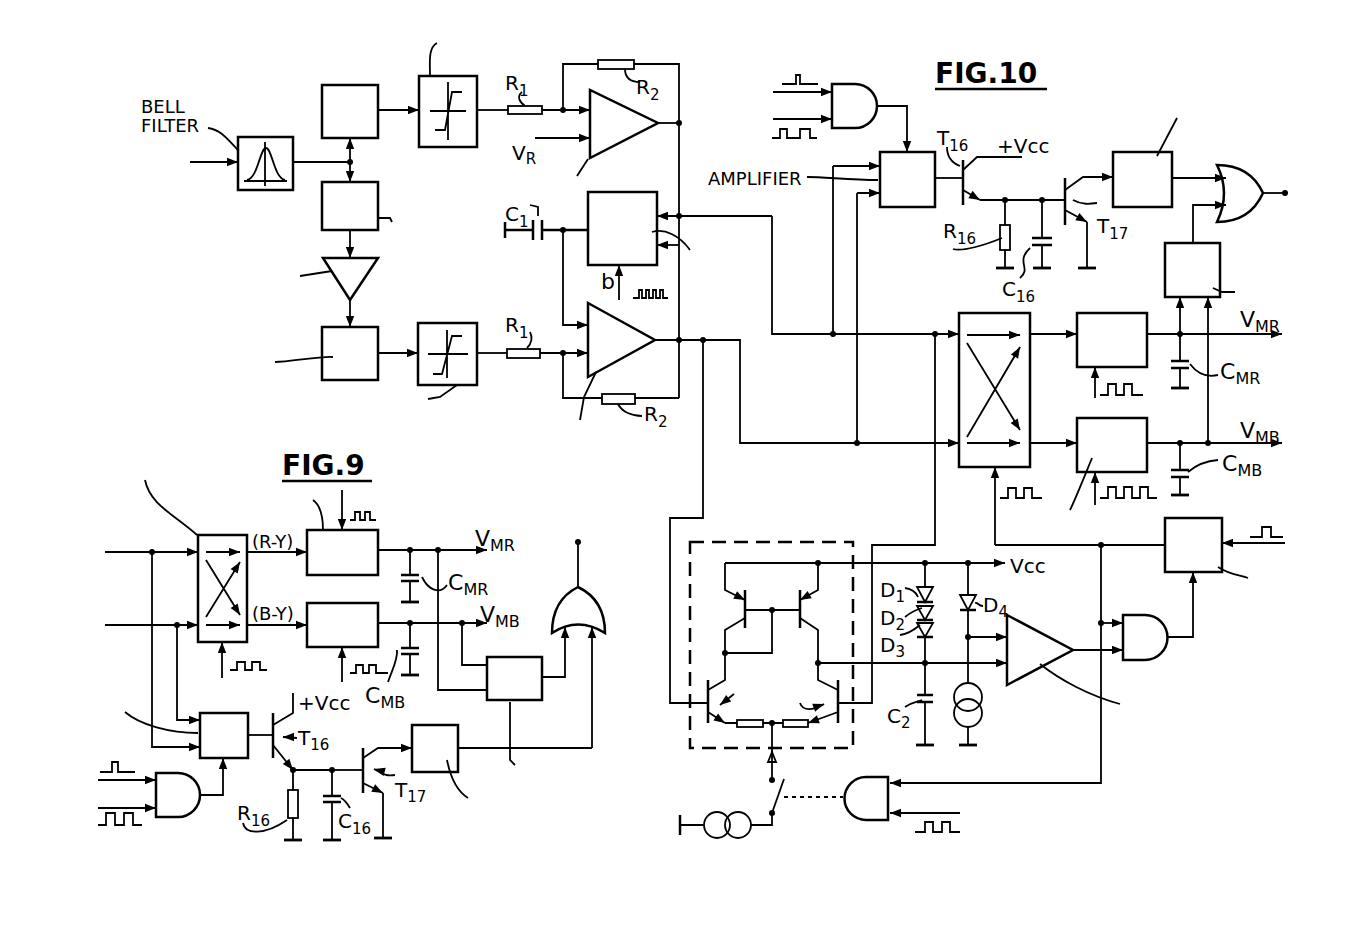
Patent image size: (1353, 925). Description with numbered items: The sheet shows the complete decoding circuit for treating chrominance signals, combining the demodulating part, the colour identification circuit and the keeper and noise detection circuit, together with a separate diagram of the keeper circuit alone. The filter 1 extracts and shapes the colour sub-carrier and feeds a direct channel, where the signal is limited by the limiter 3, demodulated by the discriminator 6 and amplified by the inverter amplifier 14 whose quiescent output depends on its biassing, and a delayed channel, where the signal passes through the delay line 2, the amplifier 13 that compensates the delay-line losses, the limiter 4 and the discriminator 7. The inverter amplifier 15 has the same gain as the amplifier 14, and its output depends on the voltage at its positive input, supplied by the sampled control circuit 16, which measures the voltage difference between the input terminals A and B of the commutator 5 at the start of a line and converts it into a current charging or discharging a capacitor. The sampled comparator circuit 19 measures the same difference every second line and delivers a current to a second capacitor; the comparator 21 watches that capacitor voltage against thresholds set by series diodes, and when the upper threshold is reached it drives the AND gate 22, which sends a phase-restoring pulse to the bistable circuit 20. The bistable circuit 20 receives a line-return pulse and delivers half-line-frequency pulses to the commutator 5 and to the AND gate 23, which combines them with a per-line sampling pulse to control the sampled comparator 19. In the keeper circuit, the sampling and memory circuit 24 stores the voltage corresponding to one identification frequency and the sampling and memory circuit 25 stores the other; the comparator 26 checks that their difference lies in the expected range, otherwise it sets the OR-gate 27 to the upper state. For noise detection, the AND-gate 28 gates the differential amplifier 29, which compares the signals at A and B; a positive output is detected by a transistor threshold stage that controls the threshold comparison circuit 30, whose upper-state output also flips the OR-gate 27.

In FIG. 10, the filter 1 is at (260, 137).
In FIG. 10, the delay line 2 is at (322, 215).
In FIG. 10, the limiter 3 is at (322, 103).
In FIG. 10, the limiter 4 is at (322, 340).
In FIG. 10, the commutator 5 is at (983, 313).
In FIG. 9, the commutator 5 is at (218, 535).
In FIG. 10, the discriminator 6 is at (418, 93).
In FIG. 10, the discriminator 7 is at (462, 323).
In FIG. 10, the amplifier 13 is at (365, 278).
In FIG. 10, the inverter amplifier 14 is at (628, 140).
In FIG. 10, the inverter amplifier 15 is at (622, 359).
In FIG. 10, the sampled control circuit 16 is at (636, 192).
In FIG. 10, the sampled comparator circuit 19 is at (775, 542).
In FIG. 10, the bistable circuit 20 is at (1207, 518).
In FIG. 10, the comparator 21 is at (1050, 632).
In FIG. 10, the AND gate 22 is at (1157, 615).
In FIG. 10, the AND gate 23 is at (867, 820).
In FIG. 10, the sampling and memory circuit 24 is at (1114, 313).
In FIG. 9, the sampling and memory circuit 24 is at (378, 540).
In FIG. 10, the sampling and memory circuit 25 is at (1128, 418).
In FIG. 9, the sampling and memory circuit 25 is at (327, 647).
In FIG. 10, the comparator 26 is at (1222, 270).
In FIG. 9, the comparator 26 is at (525, 702).
In FIG. 10, the OR-gate 27 is at (1256, 158).
In FIG. 9, the OR-gate 27 is at (558, 596).
In FIG. 10, the AND-gate 28 is at (867, 128).
In FIG. 9, the AND-gate 28 is at (174, 817).
In FIG. 10, the differential amplifier 29 is at (915, 207).
In FIG. 9, the differential amplifier 29 is at (227, 713).
In FIG. 10, the threshold comparison circuit 30 is at (1113, 163).
In FIG. 9, the threshold comparison circuit 30 is at (443, 725).